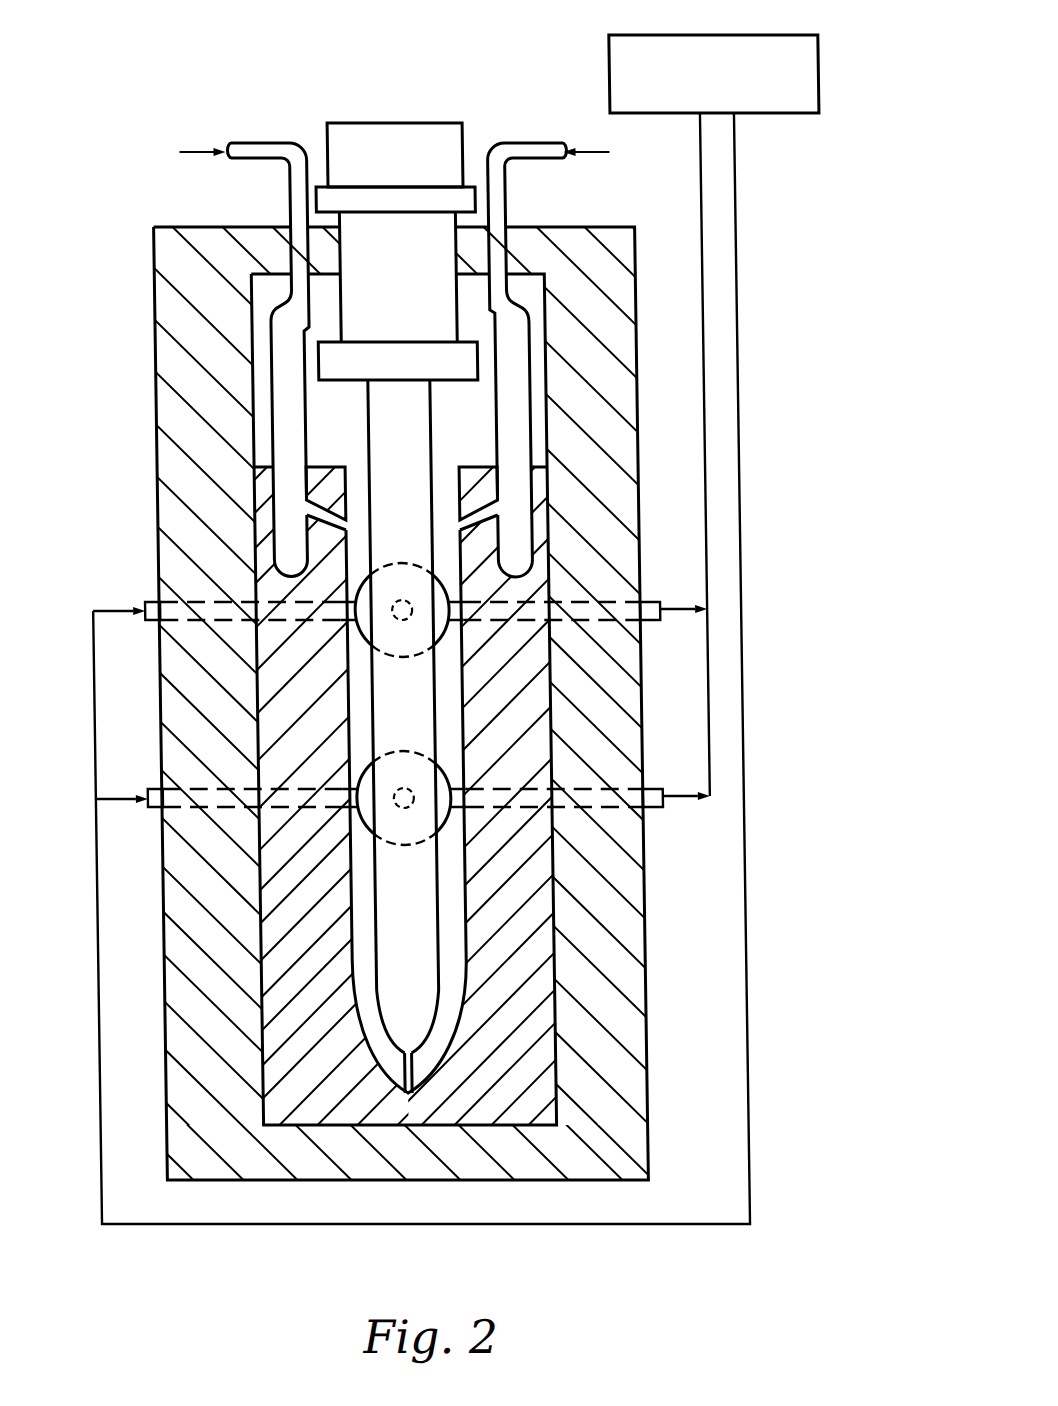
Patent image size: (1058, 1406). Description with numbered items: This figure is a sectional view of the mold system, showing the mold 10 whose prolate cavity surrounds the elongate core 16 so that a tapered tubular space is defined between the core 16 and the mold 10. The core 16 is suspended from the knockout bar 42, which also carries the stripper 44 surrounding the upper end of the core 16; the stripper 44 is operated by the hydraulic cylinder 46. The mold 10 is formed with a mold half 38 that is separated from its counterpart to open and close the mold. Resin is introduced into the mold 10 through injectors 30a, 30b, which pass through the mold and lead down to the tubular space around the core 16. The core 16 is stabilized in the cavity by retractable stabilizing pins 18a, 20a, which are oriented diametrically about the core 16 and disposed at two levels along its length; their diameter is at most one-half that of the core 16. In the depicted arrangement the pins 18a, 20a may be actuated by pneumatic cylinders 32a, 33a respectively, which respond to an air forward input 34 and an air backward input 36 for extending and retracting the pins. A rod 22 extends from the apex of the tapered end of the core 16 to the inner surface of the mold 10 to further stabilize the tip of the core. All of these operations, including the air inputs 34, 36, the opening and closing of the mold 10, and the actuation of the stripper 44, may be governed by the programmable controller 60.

The mold 10 is at (373, 48).
The elongate core 16 is at (390, 430).
The stabilizing pin 18a is at (402, 600).
The stabilizing pin 20a is at (401, 809).
The rod 22 is at (391, 1038).
The injector 30a is at (286, 373).
The injector 30b is at (526, 368).
The pneumatic cylinder 32a is at (395, 660).
The pneumatic cylinder 33a is at (388, 753).
The air forward input 34 is at (153, 622).
The air backward input 36 is at (650, 621).
The mold half 38 is at (327, 480).
The knockout bar 42 is at (326, 187).
The stripper 44 is at (383, 283).
The hydraulic cylinder 46 is at (383, 166).
The controller 60 is at (728, 35).